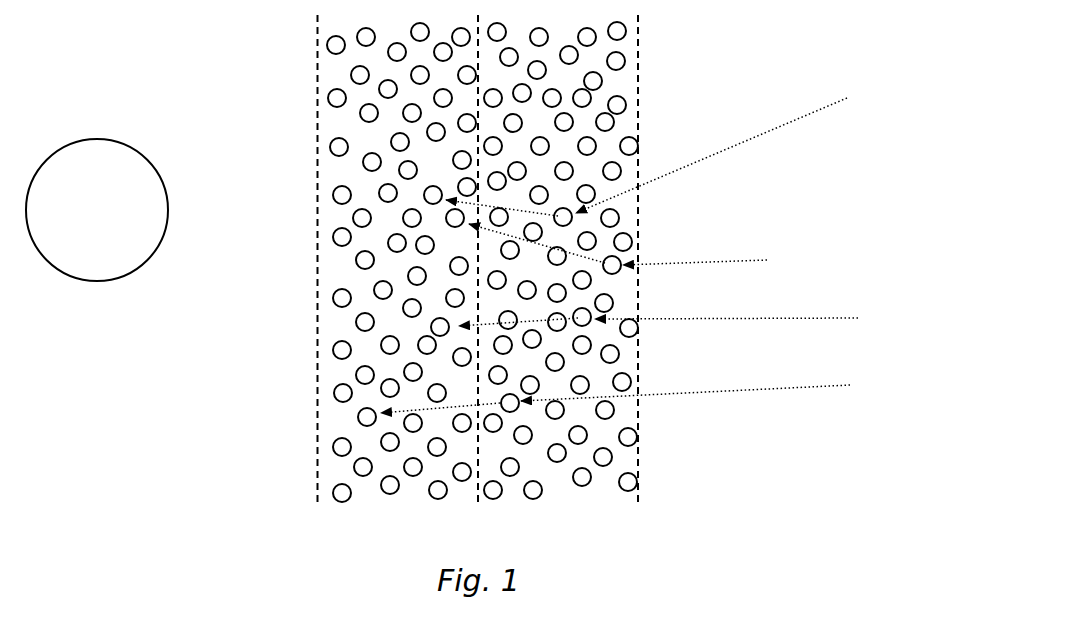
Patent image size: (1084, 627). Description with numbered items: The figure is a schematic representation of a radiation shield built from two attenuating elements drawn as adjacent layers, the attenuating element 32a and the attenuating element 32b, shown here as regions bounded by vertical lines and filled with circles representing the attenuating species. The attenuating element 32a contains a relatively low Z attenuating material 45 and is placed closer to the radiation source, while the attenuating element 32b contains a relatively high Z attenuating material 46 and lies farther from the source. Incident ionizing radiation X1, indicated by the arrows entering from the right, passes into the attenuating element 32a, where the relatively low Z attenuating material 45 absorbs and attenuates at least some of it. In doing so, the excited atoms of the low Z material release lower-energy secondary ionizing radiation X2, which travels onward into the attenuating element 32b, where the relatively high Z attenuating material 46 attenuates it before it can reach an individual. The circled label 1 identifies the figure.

The porous body 1 is at (103, 220).
The attenuating element 32a is at (648, 41).
The attenuating element 32b is at (306, 61).
The relatively low Z attenuating material 45 is at (541, 145).
The relatively high Z attenuating material 46 is at (364, 258).
The incident ionizing radiation X1 is at (757, 318).
The secondary ionizing radiation X2 is at (551, 306).